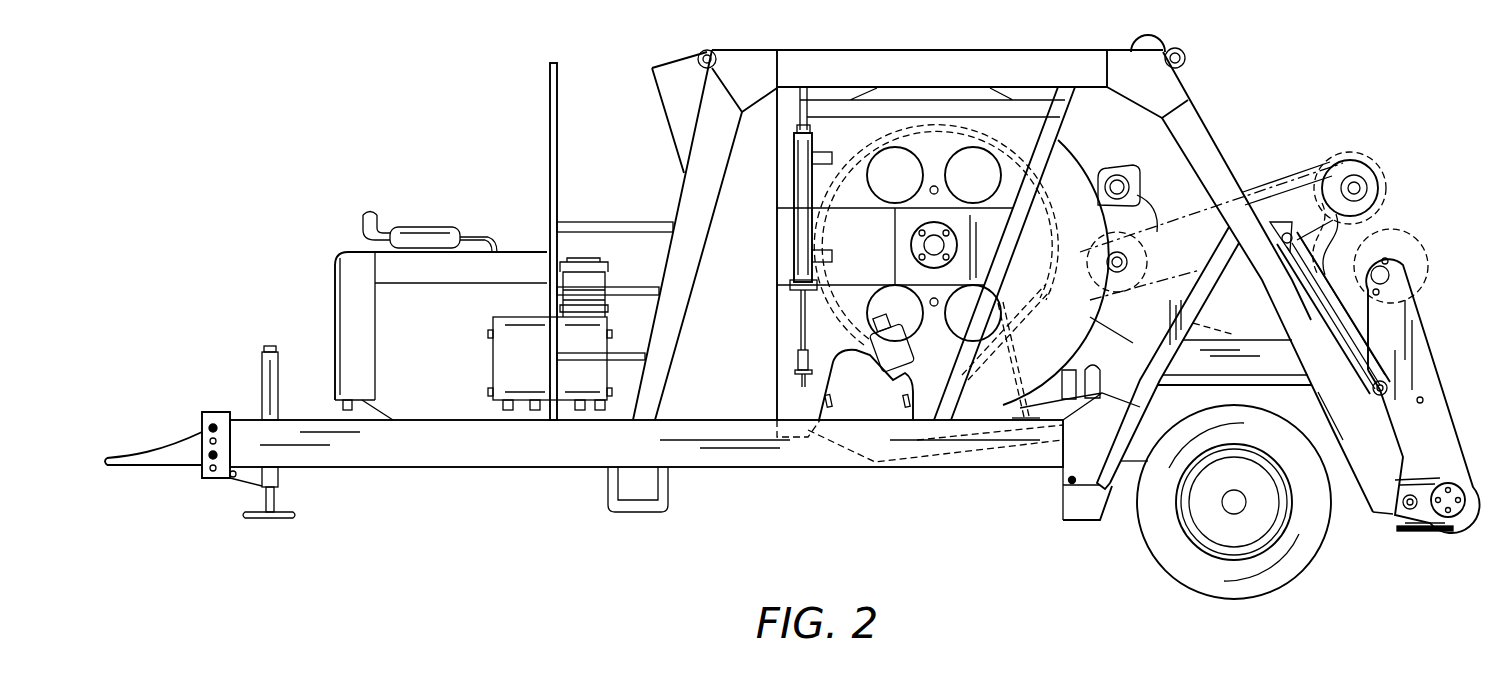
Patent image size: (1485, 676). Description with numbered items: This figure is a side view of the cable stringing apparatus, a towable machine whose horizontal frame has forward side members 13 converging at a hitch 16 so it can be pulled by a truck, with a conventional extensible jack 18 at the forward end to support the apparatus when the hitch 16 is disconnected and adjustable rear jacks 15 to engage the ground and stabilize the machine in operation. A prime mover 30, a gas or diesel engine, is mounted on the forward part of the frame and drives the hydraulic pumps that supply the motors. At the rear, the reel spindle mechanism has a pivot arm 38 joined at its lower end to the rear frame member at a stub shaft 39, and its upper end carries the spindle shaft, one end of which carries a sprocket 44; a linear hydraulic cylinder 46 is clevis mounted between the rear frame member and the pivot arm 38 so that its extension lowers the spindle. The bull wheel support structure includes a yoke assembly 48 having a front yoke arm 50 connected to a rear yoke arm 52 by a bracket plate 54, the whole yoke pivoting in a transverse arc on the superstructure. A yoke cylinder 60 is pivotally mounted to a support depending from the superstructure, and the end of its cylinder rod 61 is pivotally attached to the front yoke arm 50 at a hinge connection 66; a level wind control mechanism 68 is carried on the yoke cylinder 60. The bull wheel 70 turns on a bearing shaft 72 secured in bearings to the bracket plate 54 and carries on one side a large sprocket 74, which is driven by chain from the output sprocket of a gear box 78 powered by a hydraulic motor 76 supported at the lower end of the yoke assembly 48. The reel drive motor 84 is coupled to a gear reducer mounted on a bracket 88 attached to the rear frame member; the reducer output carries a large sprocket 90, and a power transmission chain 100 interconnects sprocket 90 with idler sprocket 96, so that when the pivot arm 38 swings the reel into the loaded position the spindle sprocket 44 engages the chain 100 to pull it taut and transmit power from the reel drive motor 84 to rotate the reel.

The side members 13 is at (408, 452).
The rear jacks 15 is at (1413, 530).
The hitch 16 is at (117, 455).
The jack 18 is at (258, 490).
The prime mover 30 is at (352, 277).
The pivot arm 38 is at (1430, 392).
The stub shafts 39 is at (1467, 517).
The sprocket 44 is at (1405, 257).
The linear hydraulic cylinder 46 is at (1362, 327).
The yoke assembly 48 is at (812, 112).
The front yoke arm 50 is at (795, 110).
The rear yoke arm 52 is at (1030, 128).
The bracket plate 54 is at (872, 243).
The yoke cylinder 60 is at (776, 290).
The cylinder rod 61 is at (801, 340).
The hinge connection 66 is at (800, 374).
The level wind control mechanism 68 is at (820, 192).
The bull wheel 70 is at (1065, 183).
The bearing shaft 72 is at (934, 246).
The large sprocket 74 is at (1050, 270).
The hydraulic motor 76 is at (880, 360).
The gear box 78 is at (878, 402).
The reel drive motor 84 is at (1122, 180).
The bracket 88 is at (1152, 250).
The large sprocket 90 is at (1147, 273).
The idler sprocket 96 is at (1338, 178).
The power transmission chain 100 is at (1298, 168).